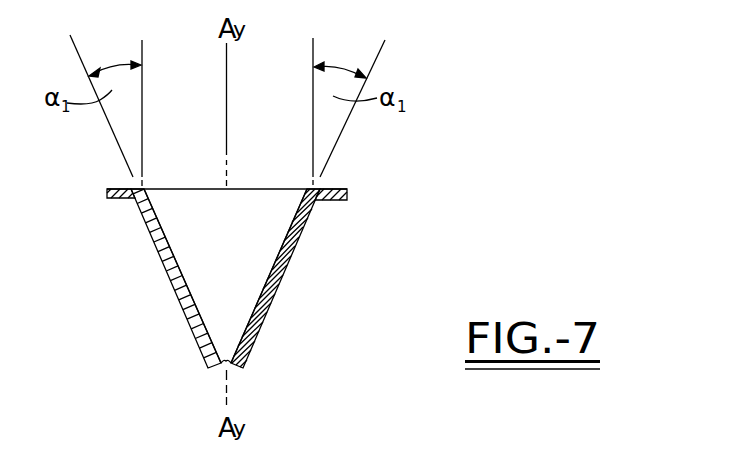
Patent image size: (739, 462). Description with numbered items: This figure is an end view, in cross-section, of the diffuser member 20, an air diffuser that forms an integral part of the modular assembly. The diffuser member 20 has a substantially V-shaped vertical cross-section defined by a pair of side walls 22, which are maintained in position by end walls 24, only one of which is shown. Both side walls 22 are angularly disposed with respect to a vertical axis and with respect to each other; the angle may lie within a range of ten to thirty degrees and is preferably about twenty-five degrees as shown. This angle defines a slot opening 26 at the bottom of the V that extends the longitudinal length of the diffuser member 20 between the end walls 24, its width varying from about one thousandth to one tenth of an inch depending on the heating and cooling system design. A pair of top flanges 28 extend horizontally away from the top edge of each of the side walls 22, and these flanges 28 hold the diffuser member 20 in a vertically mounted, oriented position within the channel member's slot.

The diffuser member 20 is at (302, 253).
The side walls 22 is at (170, 282).
The end walls 24 is at (187, 238).
The slot opening 26 is at (222, 365).
The top flanges 28 is at (118, 189).